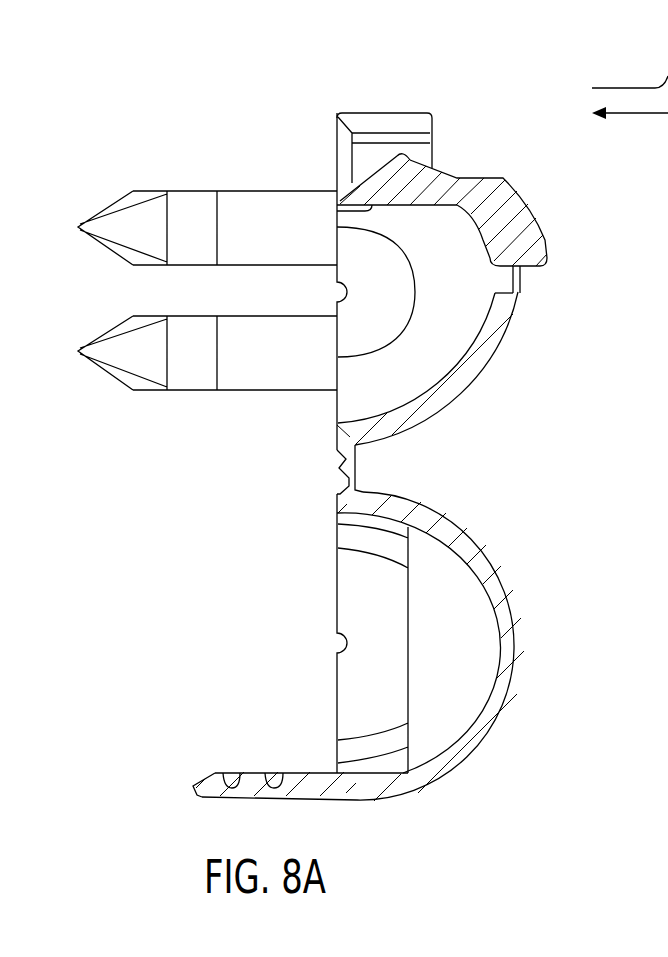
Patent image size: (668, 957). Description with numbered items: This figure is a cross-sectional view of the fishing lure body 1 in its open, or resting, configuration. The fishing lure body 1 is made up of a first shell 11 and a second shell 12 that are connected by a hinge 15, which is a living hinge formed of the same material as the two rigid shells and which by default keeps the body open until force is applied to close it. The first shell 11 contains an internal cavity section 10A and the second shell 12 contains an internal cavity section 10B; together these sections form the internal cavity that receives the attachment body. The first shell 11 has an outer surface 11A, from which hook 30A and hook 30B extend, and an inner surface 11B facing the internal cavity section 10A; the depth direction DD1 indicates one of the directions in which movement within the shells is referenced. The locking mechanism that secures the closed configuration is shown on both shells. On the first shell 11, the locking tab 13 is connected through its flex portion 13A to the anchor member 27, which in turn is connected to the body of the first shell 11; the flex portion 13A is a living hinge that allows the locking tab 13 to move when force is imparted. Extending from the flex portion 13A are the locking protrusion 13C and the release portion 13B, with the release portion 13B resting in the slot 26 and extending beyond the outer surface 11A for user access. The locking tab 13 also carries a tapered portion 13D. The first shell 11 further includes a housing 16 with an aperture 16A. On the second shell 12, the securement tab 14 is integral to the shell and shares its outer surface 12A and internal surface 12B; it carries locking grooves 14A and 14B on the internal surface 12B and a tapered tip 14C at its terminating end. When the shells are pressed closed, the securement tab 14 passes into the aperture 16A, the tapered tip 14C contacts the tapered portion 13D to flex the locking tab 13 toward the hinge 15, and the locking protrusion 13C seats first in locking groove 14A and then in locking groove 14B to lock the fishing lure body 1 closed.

The fishing lure body 1 is at (566, 819).
The internal cavity section 10A is at (356, 395).
The internal cavity section 10B is at (474, 653).
The first shell 11 is at (523, 121).
The outer surface 11A is at (478, 387).
The inner surface of first ring portion 11B is at (463, 352).
The second shell 12 is at (592, 531).
The outer surface 12A is at (491, 732).
The internal surface 12B is at (470, 690).
The locking tab 13 is at (550, 210).
The flex portion 13A is at (337, 192).
The release portion 13B is at (543, 249).
The locking protrusion 13C is at (398, 145).
The tapered portion 13D is at (346, 150).
The securement tab 14 is at (262, 712).
The locking groove 14A is at (237, 772).
The locking groove 14B is at (278, 772).
The tapered tip 14C is at (182, 793).
The hinge 15 is at (374, 464).
The housing 16 is at (432, 115).
The aperture 16A is at (331, 150).
The slot 26 is at (523, 272).
The anchor member 27 is at (343, 153).
The hook 30A is at (102, 203).
The hook 30B is at (104, 388).
The depth direction DD1 is at (657, 114).